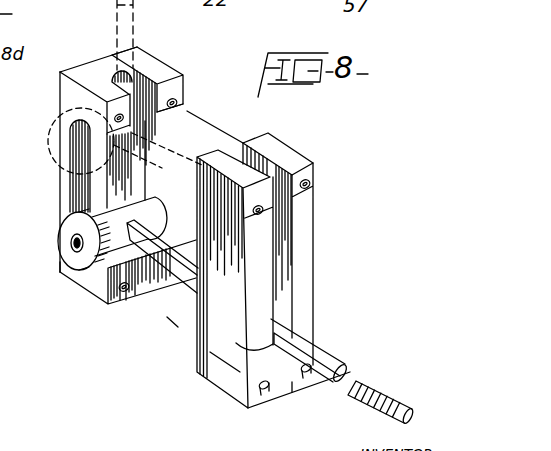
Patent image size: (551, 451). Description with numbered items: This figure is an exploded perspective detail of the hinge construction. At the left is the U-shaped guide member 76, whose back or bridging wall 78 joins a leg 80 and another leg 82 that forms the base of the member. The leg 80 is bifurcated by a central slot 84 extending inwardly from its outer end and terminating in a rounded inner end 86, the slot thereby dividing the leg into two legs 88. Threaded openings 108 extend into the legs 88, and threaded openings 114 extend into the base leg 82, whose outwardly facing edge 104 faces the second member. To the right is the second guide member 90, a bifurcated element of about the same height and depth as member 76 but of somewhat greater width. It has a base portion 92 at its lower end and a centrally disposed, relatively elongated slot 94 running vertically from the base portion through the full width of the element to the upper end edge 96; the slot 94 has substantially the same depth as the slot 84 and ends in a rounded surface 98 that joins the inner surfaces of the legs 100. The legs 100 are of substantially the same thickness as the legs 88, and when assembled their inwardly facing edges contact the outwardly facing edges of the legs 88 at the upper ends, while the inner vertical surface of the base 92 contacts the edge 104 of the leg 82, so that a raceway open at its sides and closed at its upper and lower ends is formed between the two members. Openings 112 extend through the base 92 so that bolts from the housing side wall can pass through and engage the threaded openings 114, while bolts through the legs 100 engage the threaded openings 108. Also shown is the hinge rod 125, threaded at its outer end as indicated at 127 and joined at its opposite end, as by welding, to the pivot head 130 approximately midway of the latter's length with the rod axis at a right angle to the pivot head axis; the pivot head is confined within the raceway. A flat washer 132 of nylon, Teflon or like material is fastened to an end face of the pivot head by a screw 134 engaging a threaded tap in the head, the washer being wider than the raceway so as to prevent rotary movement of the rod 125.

The U-shaped guide member 76 is at (80, 296).
The back or bridging wall 78 is at (68, 190).
The leg 80 is at (93, 102).
The other leg 82 is at (98, 293).
The central slot 84 is at (152, 76).
The rounded inner end 86 is at (97, 60).
The legs 88 is at (133, 67).
The second guide member 90 is at (196, 362).
The base portion 92 is at (285, 390).
The slot 94 is at (288, 263).
The upper end edge 96 is at (282, 160).
The rounded surface 98 is at (243, 331).
The legs 100 is at (308, 291).
The outwardly facing edge 104 is at (163, 281).
The threaded openings 108 is at (124, 119).
The openings 112 is at (308, 382).
The threaded openings 114 is at (124, 292).
The hinge rod 125 is at (324, 362).
The threaded outer end 127 is at (375, 390).
The pivot head 130 is at (147, 209).
The flat washer 132 is at (62, 238).
The screw 134 is at (72, 243).